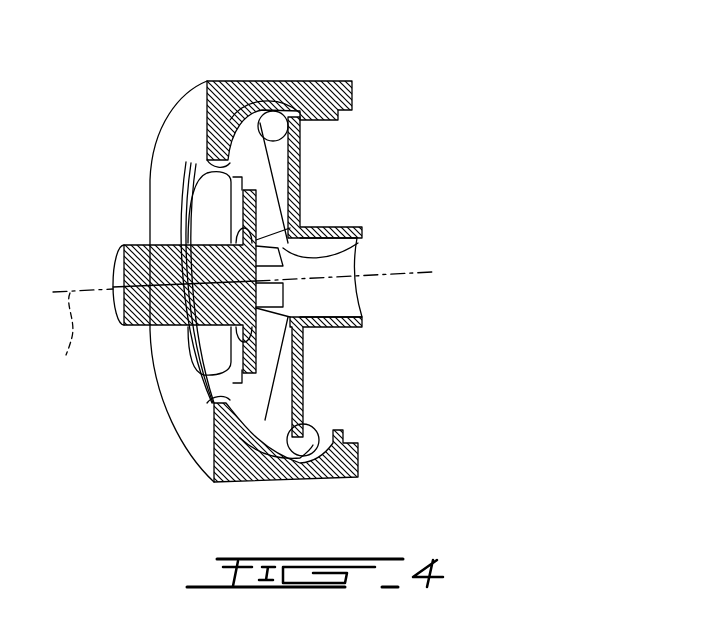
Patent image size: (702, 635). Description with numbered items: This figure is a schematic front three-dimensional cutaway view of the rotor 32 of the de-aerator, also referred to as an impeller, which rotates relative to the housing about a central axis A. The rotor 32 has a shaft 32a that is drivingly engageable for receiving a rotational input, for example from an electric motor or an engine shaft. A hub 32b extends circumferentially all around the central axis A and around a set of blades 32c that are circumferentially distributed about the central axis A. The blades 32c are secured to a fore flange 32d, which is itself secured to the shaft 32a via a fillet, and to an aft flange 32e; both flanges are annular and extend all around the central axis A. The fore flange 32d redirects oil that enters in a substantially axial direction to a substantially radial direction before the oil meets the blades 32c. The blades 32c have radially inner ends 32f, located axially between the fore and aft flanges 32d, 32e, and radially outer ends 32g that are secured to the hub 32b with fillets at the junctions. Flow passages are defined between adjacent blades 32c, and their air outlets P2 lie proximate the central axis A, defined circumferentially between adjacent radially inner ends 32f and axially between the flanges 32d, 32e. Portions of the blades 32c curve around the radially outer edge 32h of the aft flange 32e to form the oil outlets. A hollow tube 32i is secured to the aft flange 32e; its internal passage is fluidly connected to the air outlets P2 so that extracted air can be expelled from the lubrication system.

The rotor 32 is at (472, 243).
The shaft 32a is at (137, 244).
The hub 32b is at (237, 81).
The blades 32c is at (250, 163).
The fore flange 32d is at (247, 343).
The aft flange 32e is at (303, 388).
The radially inner ends 32f is at (352, 245).
The radially outer ends 32g is at (305, 136).
The radially outer edge 32h is at (316, 468).
The hollow tube 32i is at (355, 328).
The air outlets P2 is at (280, 297).
The central axis A is at (59, 339).